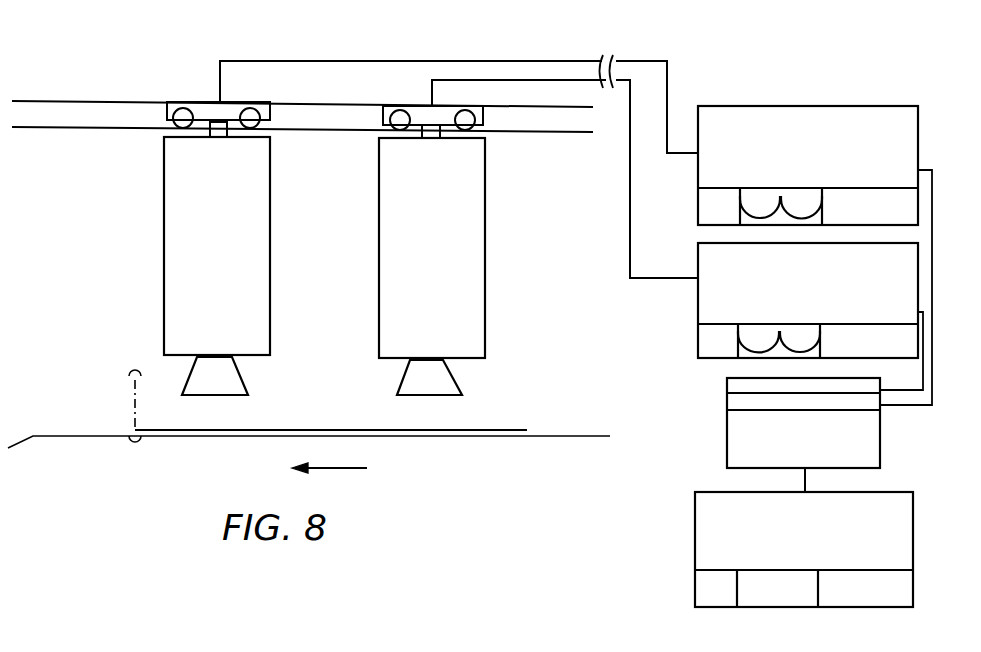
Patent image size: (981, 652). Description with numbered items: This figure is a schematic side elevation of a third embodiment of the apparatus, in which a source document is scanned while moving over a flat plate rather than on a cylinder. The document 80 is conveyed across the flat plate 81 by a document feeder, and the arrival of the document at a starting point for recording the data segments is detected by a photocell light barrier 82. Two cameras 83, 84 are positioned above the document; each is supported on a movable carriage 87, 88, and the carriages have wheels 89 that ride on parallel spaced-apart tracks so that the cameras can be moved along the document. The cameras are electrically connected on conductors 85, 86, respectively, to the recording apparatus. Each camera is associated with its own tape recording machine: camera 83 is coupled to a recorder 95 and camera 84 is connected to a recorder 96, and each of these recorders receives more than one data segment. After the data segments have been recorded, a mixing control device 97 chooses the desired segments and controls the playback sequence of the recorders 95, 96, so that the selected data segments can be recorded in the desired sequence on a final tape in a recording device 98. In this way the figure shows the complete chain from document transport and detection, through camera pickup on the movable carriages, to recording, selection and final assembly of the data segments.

The document 80 is at (335, 430).
The flat plate 81 is at (422, 436).
The photocell light barrier 82 is at (130, 372).
The camera 83 is at (163, 203).
The camera 84 is at (378, 195).
The conductor 85 is at (510, 60).
The conductor 86 is at (547, 80).
The movable carriage 87 is at (198, 100).
The movable carriage 88 is at (384, 79).
The wheels 89 is at (182, 100).
The recorder 95 is at (808, 106).
The recorder 96 is at (698, 257).
The mixing control device 97 is at (727, 427).
The recording device 98 is at (695, 542).